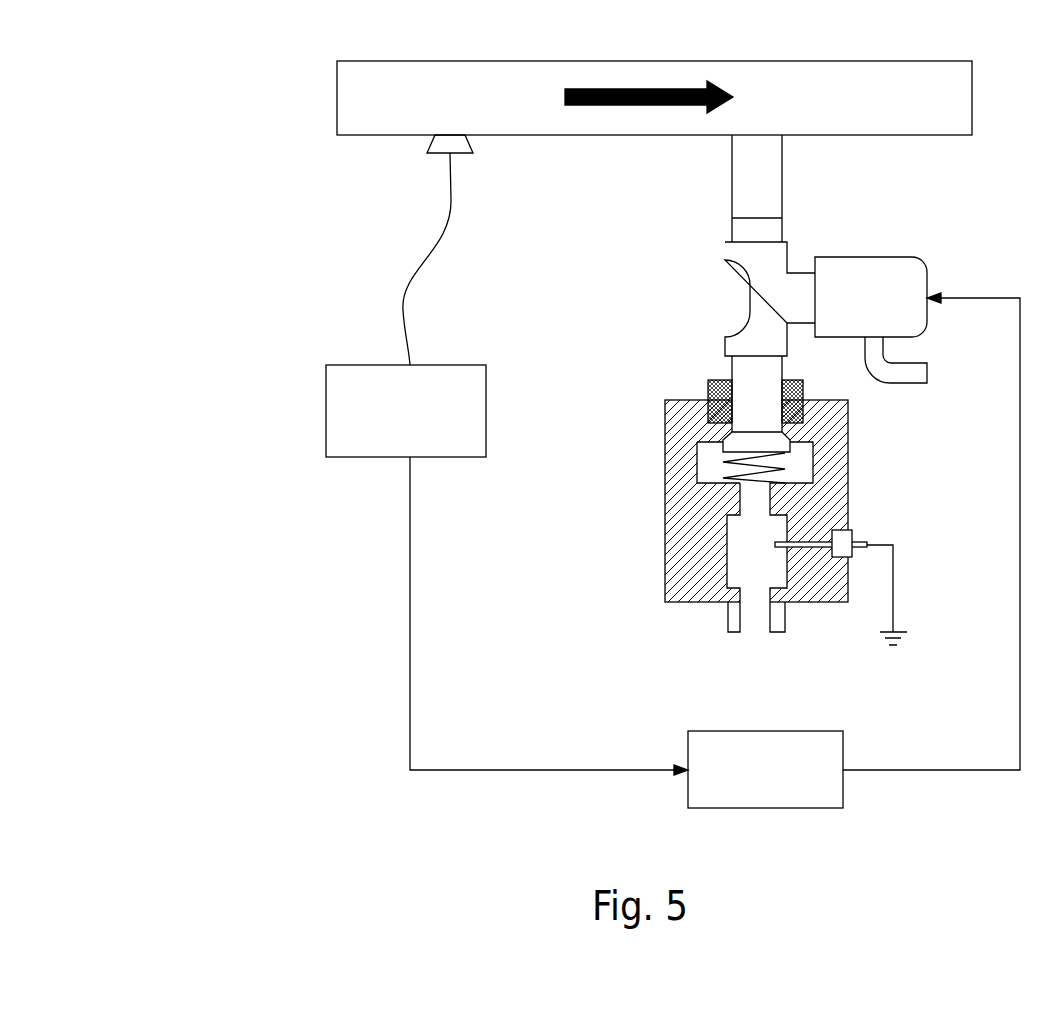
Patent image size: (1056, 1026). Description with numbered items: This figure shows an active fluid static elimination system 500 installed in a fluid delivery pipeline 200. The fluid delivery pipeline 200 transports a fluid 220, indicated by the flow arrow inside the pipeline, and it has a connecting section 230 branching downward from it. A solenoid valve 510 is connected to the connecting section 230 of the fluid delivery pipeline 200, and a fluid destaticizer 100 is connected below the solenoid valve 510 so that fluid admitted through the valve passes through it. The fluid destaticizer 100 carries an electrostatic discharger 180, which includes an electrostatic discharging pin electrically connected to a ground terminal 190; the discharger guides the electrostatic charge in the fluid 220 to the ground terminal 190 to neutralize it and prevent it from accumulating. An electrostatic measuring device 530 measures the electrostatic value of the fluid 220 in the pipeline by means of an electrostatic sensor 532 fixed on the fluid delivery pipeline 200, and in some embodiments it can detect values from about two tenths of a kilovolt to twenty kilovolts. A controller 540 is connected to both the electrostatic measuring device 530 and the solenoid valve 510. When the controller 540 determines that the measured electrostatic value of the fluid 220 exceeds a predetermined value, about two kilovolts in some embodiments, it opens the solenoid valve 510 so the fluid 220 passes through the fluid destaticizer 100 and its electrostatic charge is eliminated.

The fluid destaticizer 100 is at (623, 374).
The electrostatic discharger 180 is at (852, 532).
The ground terminal 190 is at (908, 632).
The fluid delivery pipeline 200 is at (272, 102).
The fluid 220 is at (628, 88).
The connecting section 230 is at (775, 166).
The active fluid static elimination system 500 is at (594, 468).
The solenoid valve 510 is at (783, 251).
The electrostatic measuring device 530 is at (326, 415).
The electrostatic sensor 532 is at (465, 145).
The controller 540 is at (838, 749).